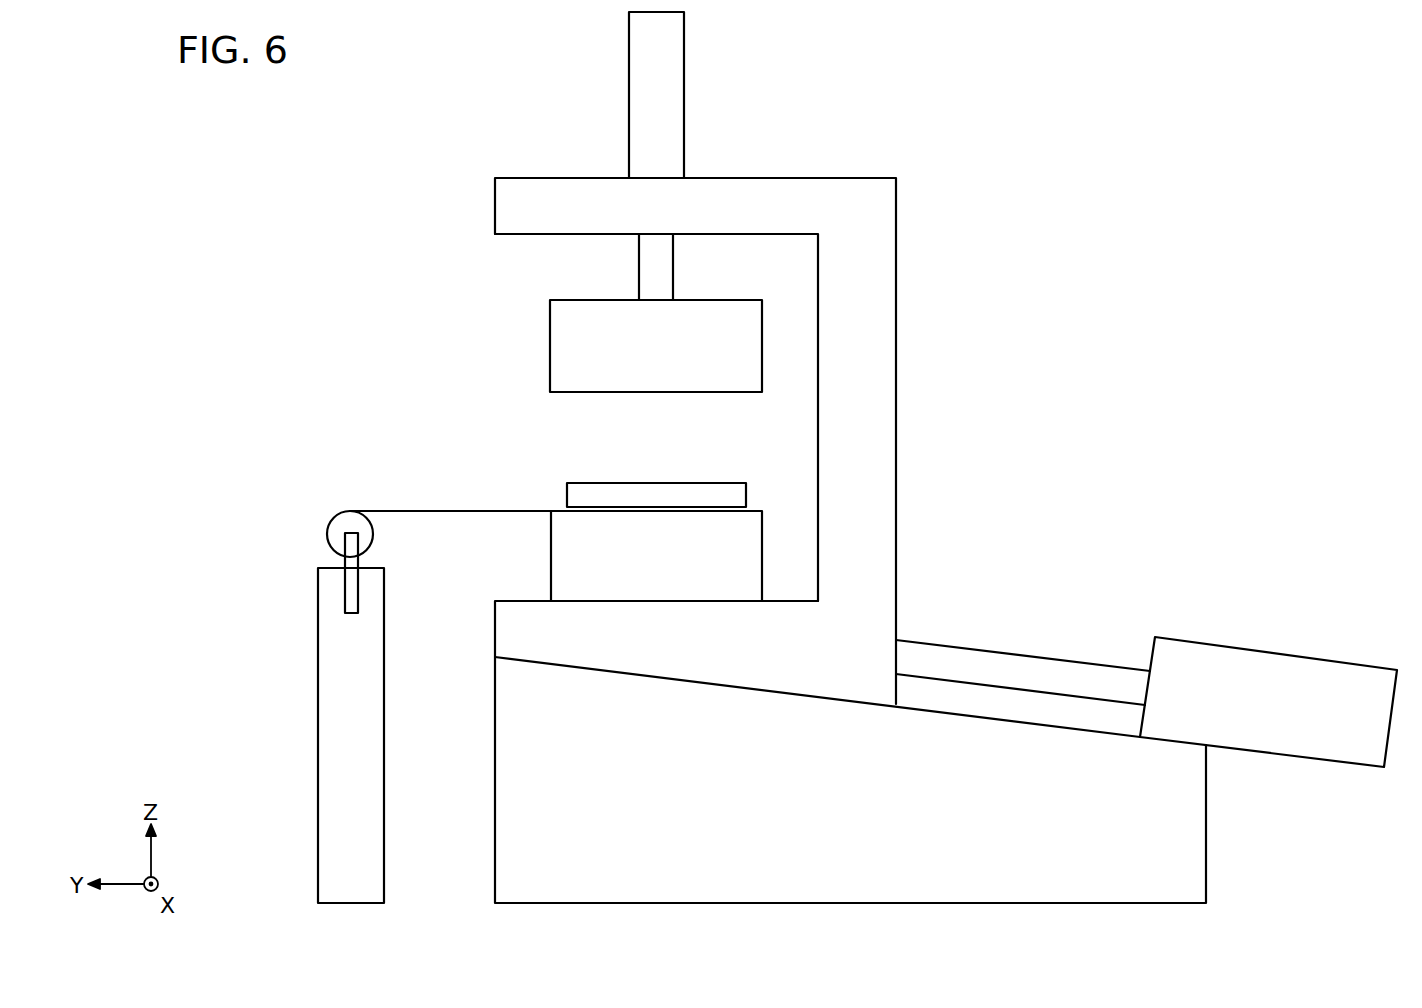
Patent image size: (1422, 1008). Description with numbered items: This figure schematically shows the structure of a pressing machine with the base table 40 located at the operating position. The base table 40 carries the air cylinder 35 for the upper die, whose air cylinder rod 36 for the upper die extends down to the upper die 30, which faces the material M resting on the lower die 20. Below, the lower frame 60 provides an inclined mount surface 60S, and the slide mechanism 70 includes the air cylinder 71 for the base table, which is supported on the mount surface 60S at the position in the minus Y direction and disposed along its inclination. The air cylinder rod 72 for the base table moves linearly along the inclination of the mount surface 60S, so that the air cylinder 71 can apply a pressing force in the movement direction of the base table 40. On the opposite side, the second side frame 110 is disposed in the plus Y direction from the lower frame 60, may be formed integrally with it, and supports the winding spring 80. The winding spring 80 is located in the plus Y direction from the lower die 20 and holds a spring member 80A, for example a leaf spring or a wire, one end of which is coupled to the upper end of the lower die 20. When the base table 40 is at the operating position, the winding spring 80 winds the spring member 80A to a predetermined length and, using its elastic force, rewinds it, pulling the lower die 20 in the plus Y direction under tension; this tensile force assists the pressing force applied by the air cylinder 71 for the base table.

The air cylinder for the upper die 35 is at (632, 90).
The base table 40 is at (496, 212).
The air cylinder rod for the upper die 36 is at (641, 268).
The upper die 30 is at (555, 347).
The material M is at (570, 497).
The lower die 20 is at (556, 555).
The spring member 80A is at (378, 511).
The winding spring 80 is at (333, 535).
The second side frame 110 is at (323, 670).
The lower frame 60 is at (809, 752).
The mount surface 60S is at (1045, 715).
The air cylinder rod for the base table 72 is at (1043, 660).
The slide mechanism 70 is at (1268, 666).
The air cylinder for the base table 71 is at (1258, 652).